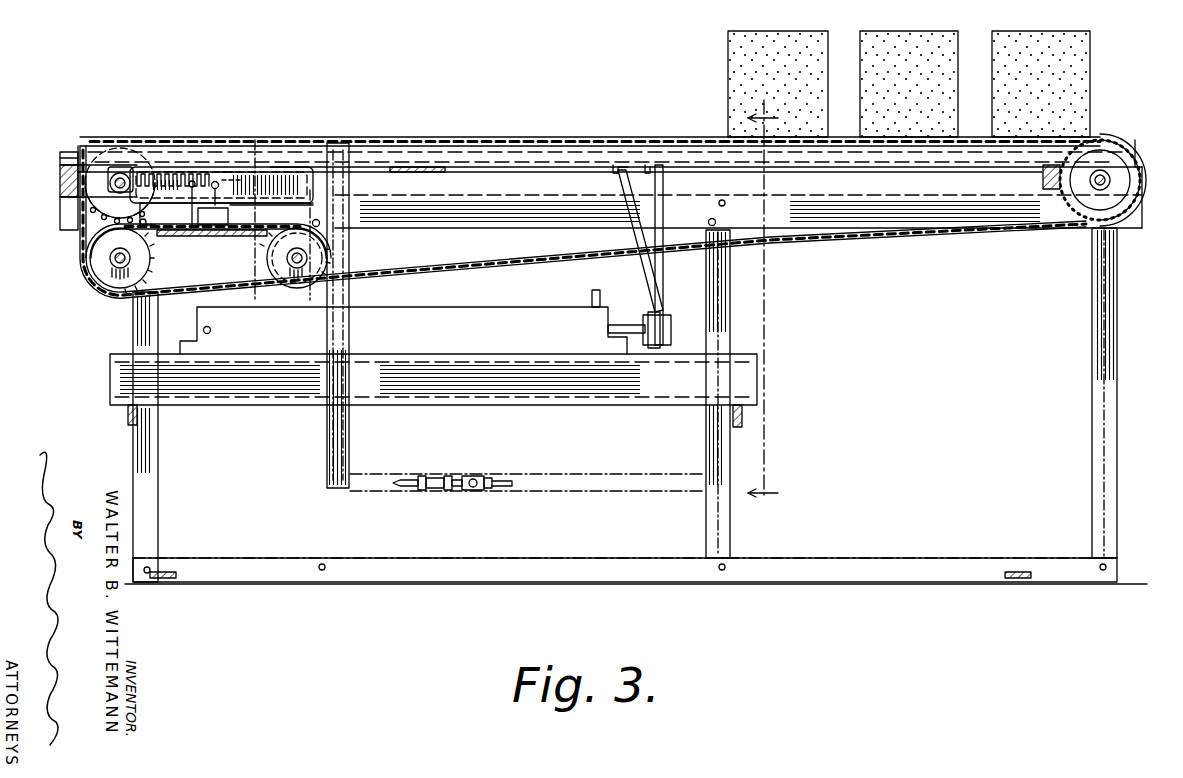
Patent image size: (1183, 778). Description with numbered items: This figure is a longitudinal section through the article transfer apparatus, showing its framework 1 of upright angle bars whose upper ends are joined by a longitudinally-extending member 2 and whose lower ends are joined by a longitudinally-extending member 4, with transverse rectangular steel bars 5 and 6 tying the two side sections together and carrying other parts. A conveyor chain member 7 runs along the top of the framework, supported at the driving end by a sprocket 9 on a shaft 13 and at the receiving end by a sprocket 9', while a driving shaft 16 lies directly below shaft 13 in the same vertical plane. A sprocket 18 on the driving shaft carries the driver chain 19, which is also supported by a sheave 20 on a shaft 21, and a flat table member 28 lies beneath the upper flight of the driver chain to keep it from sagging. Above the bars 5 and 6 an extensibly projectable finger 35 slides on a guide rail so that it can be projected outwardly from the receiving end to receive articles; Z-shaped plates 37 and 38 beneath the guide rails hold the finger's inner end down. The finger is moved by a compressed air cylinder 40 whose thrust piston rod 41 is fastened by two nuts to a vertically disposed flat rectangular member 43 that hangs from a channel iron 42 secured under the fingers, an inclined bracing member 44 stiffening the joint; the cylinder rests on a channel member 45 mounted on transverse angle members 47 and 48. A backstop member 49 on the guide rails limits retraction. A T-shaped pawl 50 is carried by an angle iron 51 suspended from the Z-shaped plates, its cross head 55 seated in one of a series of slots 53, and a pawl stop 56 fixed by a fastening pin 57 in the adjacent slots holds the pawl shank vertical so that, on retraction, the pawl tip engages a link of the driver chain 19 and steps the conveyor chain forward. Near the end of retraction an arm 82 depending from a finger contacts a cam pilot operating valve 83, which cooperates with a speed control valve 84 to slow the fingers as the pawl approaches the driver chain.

The framework 1 is at (132, 462).
The longitudinally-extending member 2 is at (876, 218).
The longitudinally-extending member 4 is at (858, 560).
The rectangular steel bar 5 is at (1042, 178).
The rectangular steel bar 6 is at (75, 186).
The chain member 7 is at (1020, 222).
The sprocket 9 is at (94, 183).
The sprocket 9' is at (1112, 181).
The shaft 13 is at (107, 177).
The driving shaft 16 is at (108, 263).
The sprocket 18 is at (100, 252).
The driver chain 19 is at (243, 228).
The sheave 20 is at (272, 254).
The shaft 21 is at (308, 260).
The table member 28 is at (208, 236).
The extensibly projectable finger 35 is at (470, 148).
The Z-shaped plate 37 is at (322, 178).
The Z-shaped plate 38 is at (118, 205).
The compressed air cylinder 40 is at (536, 306).
The thrust piston rod 41 is at (628, 324).
The channel iron 42 is at (612, 172).
The vertically disposed flat rectangular member 43 is at (656, 265).
The inclined bracing member 44 is at (634, 205).
The channel member 45 is at (578, 396).
The angle member 47 is at (748, 410).
The angle member 48 is at (126, 418).
The backstop member 49 is at (66, 151).
The pawl 50 is at (192, 212).
The angle iron 51 is at (272, 192).
The slots 53 is at (166, 170).
The cross head 55 is at (193, 180).
The pawl stop 56 is at (252, 148).
The fastening pin 57 is at (218, 181).
The arm 82 is at (350, 436).
The cam pilot operating valve 83 is at (472, 490).
The speed control valve 84 is at (432, 490).